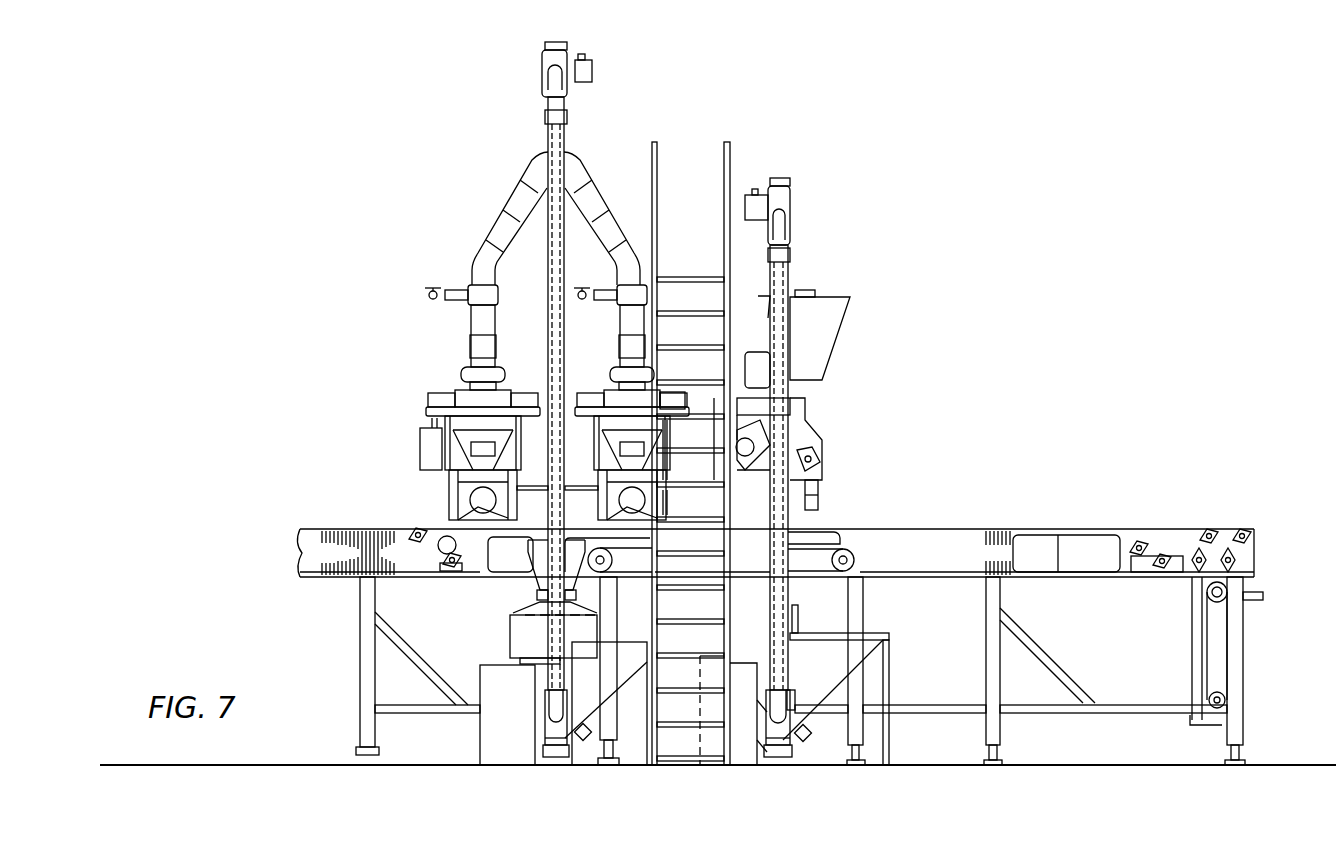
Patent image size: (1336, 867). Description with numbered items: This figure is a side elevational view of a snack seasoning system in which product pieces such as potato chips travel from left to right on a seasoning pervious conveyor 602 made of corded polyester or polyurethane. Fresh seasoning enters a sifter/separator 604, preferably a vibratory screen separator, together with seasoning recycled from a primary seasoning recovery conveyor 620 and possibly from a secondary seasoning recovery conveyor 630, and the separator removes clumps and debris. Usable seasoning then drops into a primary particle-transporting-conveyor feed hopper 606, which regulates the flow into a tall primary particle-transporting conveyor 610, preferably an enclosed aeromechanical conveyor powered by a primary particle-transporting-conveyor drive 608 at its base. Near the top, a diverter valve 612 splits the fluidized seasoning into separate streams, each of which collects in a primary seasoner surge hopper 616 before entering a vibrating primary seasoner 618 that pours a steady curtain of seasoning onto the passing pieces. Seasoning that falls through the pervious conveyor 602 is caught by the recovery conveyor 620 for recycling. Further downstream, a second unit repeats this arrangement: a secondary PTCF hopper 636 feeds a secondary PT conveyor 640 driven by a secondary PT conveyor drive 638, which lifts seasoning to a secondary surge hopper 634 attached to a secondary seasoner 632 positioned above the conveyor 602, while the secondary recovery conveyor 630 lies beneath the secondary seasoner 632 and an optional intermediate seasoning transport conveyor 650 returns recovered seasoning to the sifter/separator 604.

The seasoning pervious conveyor 602 is at (1170, 529).
The sifter/separator 604 is at (510, 635).
The primary particle-transporting-conveyor feed hopper 606 is at (622, 677).
The primary particle-transporting-conveyor drive 608 is at (556, 757).
The primary particle-transporting conveyor 610 is at (549, 305).
The diverter valve 612 is at (535, 155).
The primary seasoner surge hopper 616 is at (462, 388).
The primary seasoner 618 is at (452, 490).
The primary seasoning recovery conveyor 620 is at (528, 550).
The secondary seasoning recovery conveyor 630 is at (830, 532).
The secondary seasoner 632 is at (812, 428).
The secondary surge hopper 634 is at (840, 317).
The secondary PTCF hopper 636 is at (812, 633).
The secondary PT conveyor drive 638 is at (778, 757).
The secondary PT conveyor 640 is at (790, 277).
The intermediate seasoning transport conveyor 650 is at (856, 560).